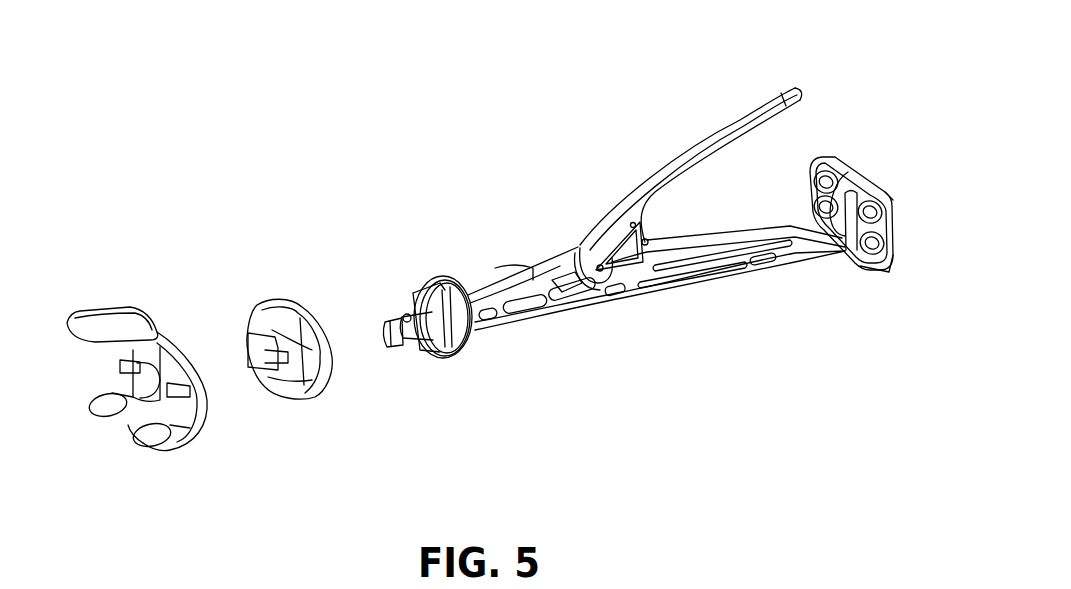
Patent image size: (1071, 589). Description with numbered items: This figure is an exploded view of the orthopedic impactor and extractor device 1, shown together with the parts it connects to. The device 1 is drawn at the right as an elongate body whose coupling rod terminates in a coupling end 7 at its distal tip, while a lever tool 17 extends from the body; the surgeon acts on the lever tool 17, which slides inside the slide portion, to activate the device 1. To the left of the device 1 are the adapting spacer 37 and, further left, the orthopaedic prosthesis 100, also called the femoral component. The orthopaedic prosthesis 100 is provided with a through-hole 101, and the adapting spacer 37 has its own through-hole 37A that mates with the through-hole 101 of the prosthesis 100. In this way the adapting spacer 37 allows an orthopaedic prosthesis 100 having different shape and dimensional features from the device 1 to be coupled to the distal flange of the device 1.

The orthopedic impactor and extractor device 1 is at (638, 245).
The coupling end 7 is at (392, 350).
The lever tool 17 is at (778, 90).
The adapting spacer 37 is at (286, 330).
The through-hole 37A is at (277, 357).
The orthopaedic prosthesis 100 is at (127, 351).
The through-hole 101 is at (173, 380).